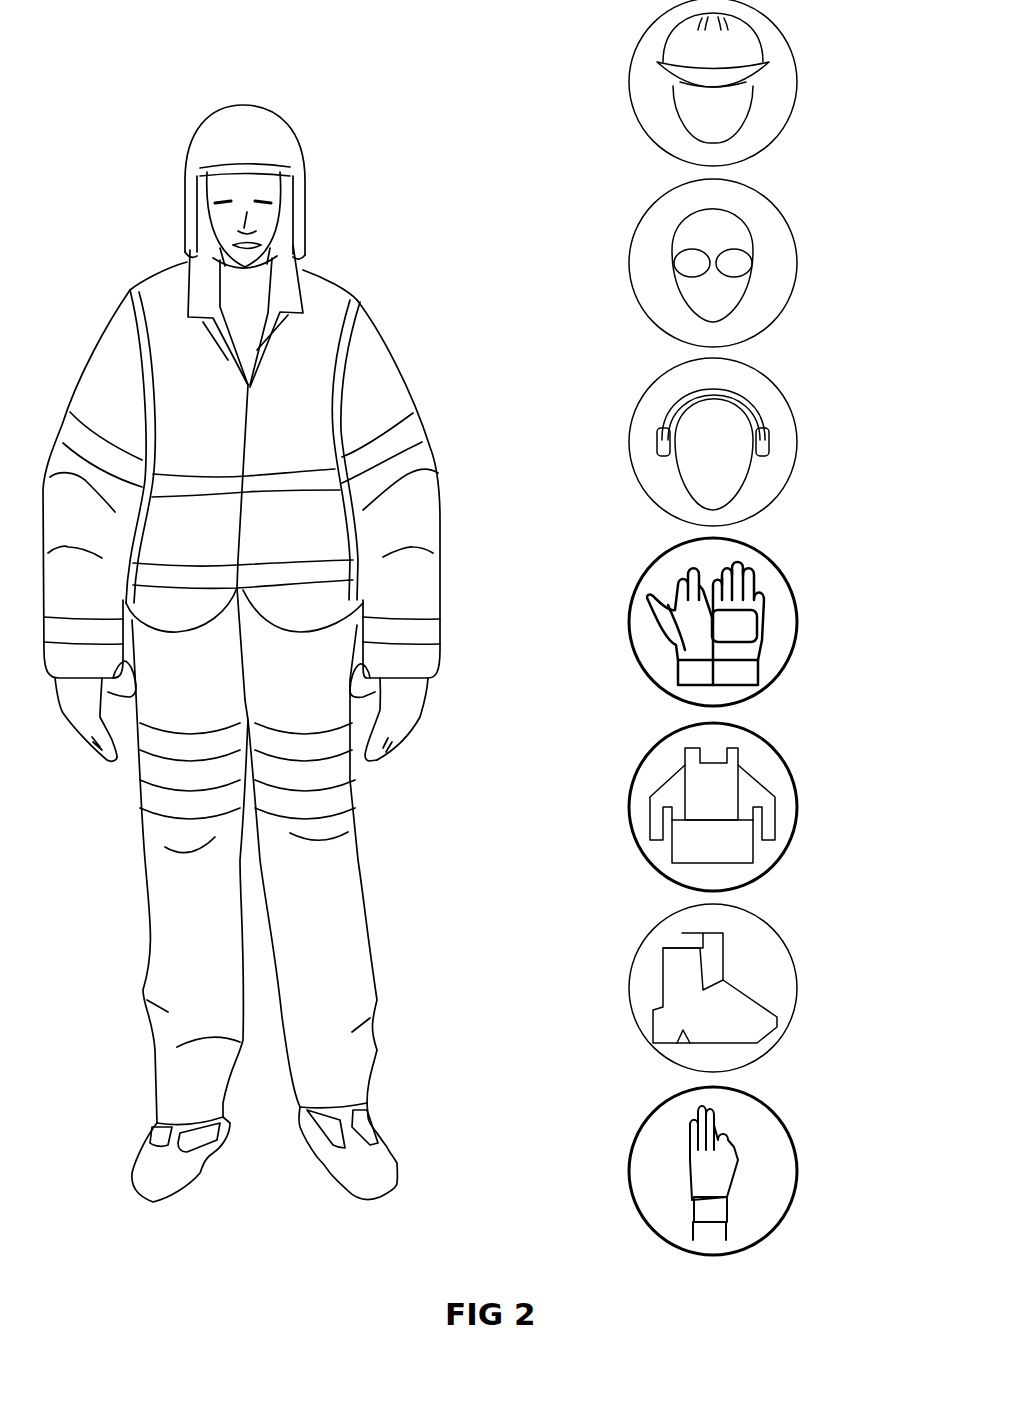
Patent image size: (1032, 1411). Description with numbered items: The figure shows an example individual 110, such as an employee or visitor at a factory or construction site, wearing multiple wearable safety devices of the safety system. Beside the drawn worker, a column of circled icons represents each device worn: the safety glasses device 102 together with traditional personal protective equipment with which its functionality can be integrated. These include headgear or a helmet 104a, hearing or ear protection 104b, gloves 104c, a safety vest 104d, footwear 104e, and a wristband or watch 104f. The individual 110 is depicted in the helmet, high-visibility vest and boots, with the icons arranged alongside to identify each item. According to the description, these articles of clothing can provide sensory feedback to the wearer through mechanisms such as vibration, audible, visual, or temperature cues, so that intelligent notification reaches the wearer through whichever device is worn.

The individual 110 is at (150, 96).
The headgear/helmet 104a is at (798, 78).
The safety glasses device 102 is at (798, 258).
The hearing/ear protection 104b is at (798, 439).
The gloves 104c is at (798, 622).
The safety vest 104d is at (798, 806).
The footwear 104e is at (798, 988).
The wristband/watch 104f is at (798, 1171).